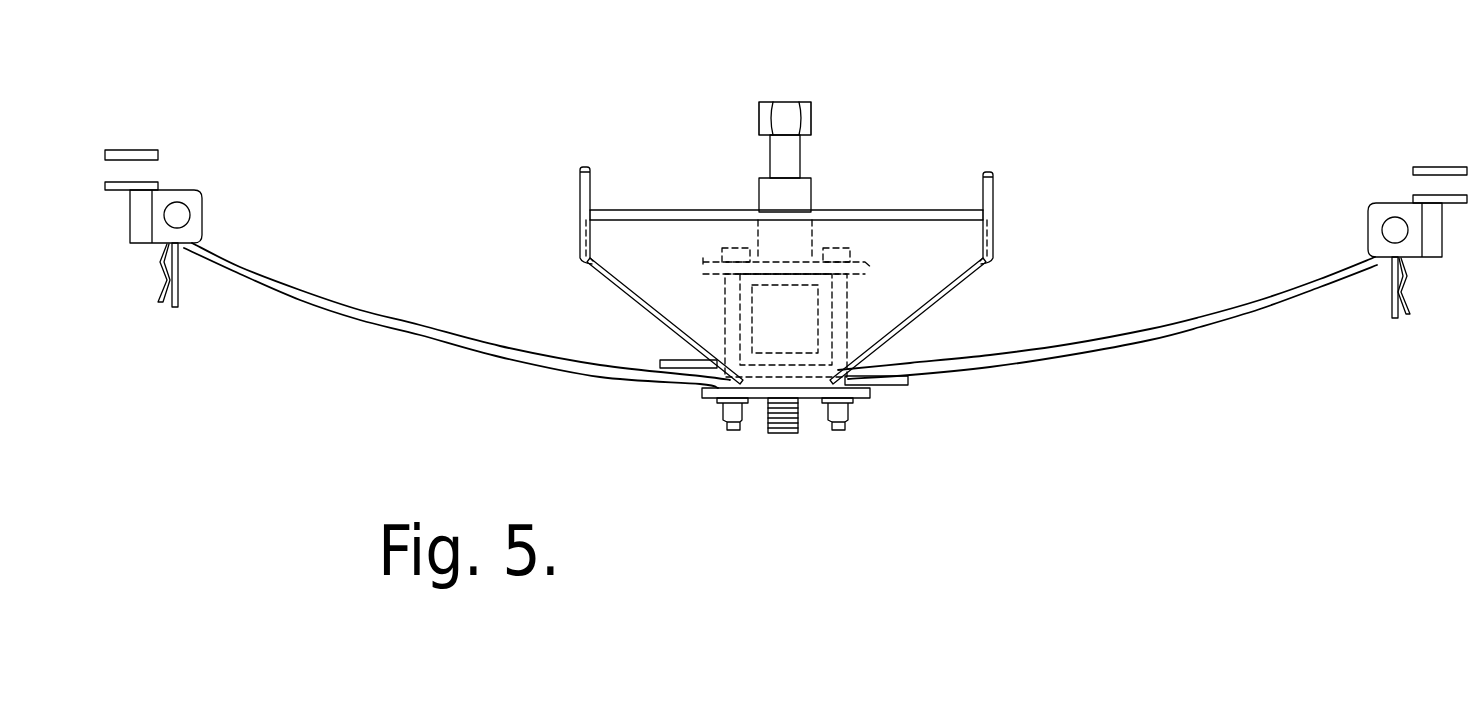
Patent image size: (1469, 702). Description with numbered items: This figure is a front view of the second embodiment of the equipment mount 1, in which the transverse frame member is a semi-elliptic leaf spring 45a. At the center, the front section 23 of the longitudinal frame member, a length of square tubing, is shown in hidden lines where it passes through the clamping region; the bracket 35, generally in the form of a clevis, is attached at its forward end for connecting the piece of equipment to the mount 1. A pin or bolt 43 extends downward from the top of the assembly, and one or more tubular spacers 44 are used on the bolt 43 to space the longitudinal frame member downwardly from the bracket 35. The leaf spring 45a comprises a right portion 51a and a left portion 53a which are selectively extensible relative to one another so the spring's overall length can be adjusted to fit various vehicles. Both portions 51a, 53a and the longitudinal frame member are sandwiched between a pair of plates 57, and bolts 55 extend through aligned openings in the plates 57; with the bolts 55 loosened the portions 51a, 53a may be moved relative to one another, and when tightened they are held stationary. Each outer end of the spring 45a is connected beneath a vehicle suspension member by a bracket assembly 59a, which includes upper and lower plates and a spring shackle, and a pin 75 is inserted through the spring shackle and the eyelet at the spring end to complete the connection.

The mount 1 is at (1162, 186).
The front section 23 is at (847, 320).
The bracket 35 is at (960, 286).
The bolt 43 is at (787, 102).
The tubular spacer 44 is at (813, 192).
The semi-elliptic leaf spring 45a is at (1179, 342).
The right portion 51a is at (407, 332).
The left portion 53a is at (1033, 365).
The bolts 55 is at (728, 429).
The plates 57 is at (901, 422).
The bracket assembly 59a is at (188, 180).
The pin 75 is at (190, 212).